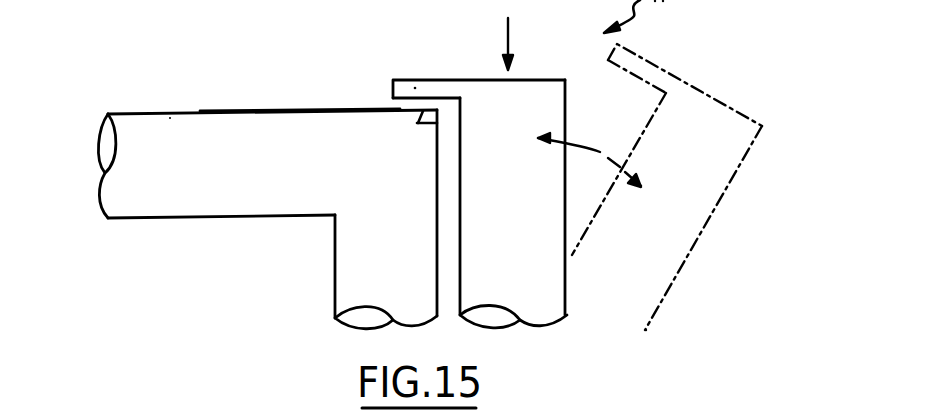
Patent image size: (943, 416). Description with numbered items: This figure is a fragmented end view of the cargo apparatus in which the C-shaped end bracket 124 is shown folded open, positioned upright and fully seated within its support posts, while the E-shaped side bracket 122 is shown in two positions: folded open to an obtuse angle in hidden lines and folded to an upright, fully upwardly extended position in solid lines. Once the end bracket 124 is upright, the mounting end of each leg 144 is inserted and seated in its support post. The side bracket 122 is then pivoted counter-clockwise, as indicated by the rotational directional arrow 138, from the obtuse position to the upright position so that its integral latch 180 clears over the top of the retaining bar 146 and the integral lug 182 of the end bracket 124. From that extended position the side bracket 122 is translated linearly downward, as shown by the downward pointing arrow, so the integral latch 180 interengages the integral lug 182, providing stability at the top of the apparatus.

The side bracket 122 is at (550, 80).
The end bracket 124 is at (198, 111).
The pivoting direction arrow 138 is at (557, 122).
The leg 144 is at (335, 258).
The retaining bar 146 is at (278, 111).
The integral latch 180 is at (436, 80).
The integral lug 182 is at (418, 122).